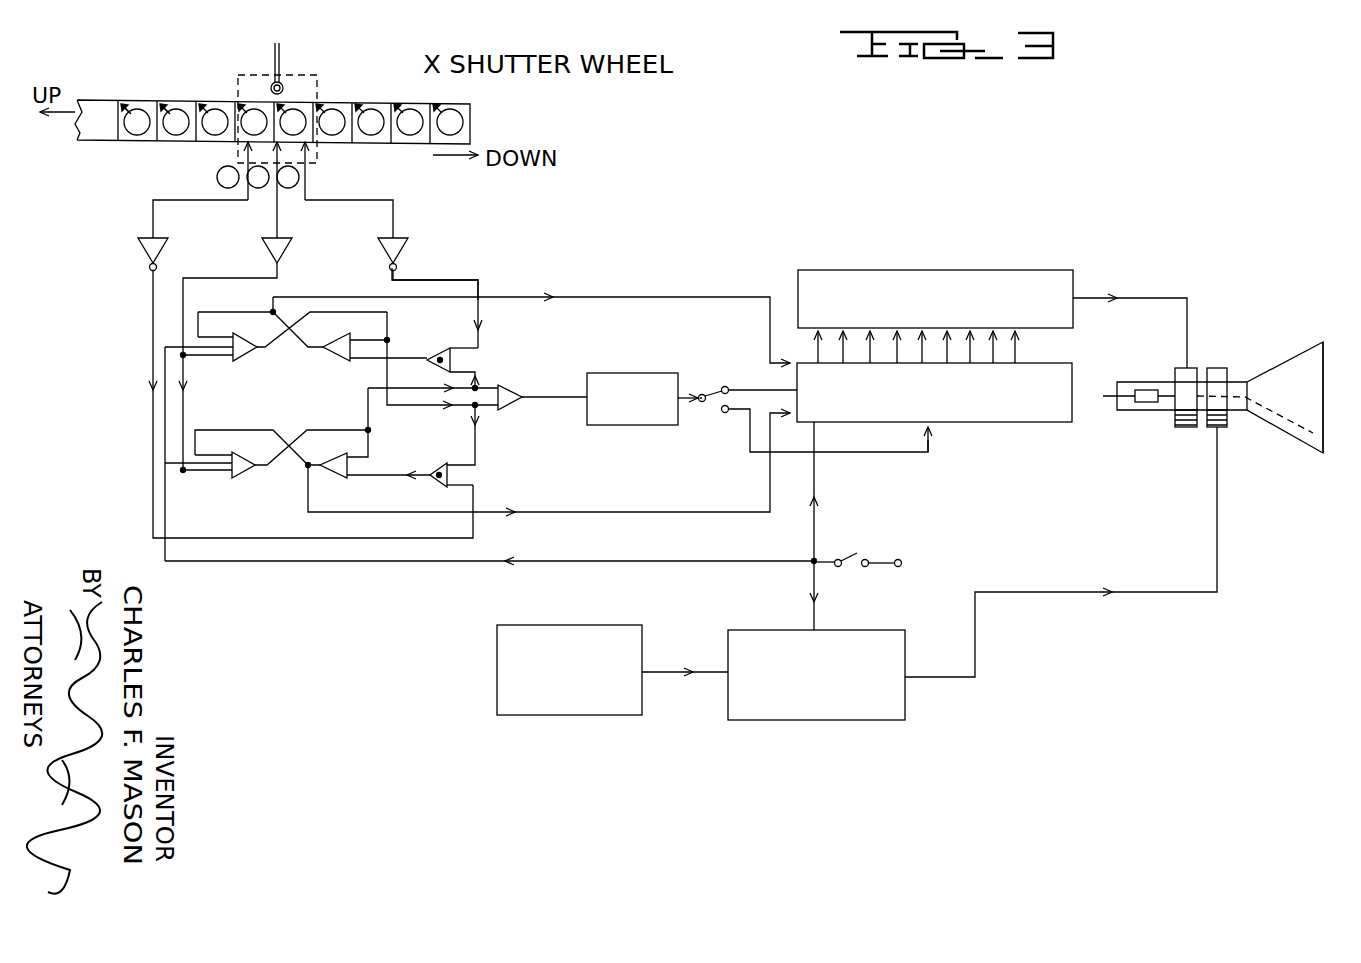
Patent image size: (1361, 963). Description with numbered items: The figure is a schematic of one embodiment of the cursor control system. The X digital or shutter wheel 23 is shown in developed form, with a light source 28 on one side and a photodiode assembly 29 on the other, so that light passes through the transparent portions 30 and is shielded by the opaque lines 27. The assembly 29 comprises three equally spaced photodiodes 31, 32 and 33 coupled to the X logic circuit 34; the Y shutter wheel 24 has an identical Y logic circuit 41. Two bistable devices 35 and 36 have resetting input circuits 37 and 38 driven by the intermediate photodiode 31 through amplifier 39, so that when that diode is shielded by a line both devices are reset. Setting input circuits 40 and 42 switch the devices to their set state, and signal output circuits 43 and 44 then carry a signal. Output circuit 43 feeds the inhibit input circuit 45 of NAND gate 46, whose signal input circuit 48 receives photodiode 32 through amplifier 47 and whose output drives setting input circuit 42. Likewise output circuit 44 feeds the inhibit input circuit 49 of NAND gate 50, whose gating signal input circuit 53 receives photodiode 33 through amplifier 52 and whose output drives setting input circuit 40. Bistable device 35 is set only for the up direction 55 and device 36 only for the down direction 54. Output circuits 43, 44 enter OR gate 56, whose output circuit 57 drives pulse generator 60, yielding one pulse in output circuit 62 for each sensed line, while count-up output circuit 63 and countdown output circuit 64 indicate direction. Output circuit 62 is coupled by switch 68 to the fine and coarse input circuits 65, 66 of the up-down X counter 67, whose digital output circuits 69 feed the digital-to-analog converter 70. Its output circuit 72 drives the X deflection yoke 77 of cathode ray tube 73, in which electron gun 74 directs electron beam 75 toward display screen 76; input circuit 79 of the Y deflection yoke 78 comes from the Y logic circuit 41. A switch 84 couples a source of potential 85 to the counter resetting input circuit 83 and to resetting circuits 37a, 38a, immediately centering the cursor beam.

The X digital or shutter wheel 23 is at (485, 126).
The Y shutter wheel 24 is at (574, 712).
The opaque lines 27 is at (120, 115).
The light source 28 is at (293, 68).
The photodiode assembly 29 is at (236, 144).
The transparent portions 30 is at (148, 112).
The photodiode No. 1 31 is at (273, 202).
The photodiode No. 2 32 is at (238, 152).
The photodiode No. 3 33 is at (306, 152).
The X logic circuit 34 is at (640, 341).
The bistable device 35 is at (305, 349).
The bistable device 36 is at (306, 475).
The resetting input circuit 37 is at (228, 367).
The resetting circuit 37a is at (178, 343).
The resetting input circuit 38 is at (223, 486).
The resetting circuit 38a is at (178, 462).
The amplifier 39 is at (292, 254).
The setting input circuit 40 is at (368, 365).
The Y logic circuit 41 is at (826, 714).
The setting input circuit 42 is at (358, 474).
The signal output circuit 43 is at (424, 405).
The signal output circuit 44 is at (430, 362).
The inhibit input circuit 45 is at (480, 462).
The NAND gate 46 is at (438, 462).
The amplifier 47 is at (140, 245).
The signal input circuit 48 is at (474, 490).
The inhibit input circuit 49 is at (477, 370).
The NAND gate 50 is at (432, 352).
The amplifier 52 is at (410, 250).
The gating signal input circuit 53 is at (472, 316).
The down direction 54 is at (460, 165).
The up direction 55 is at (62, 115).
The OR gate 56 is at (512, 390).
The output circuit 57 is at (545, 395).
The pulse generator 60 is at (630, 373).
The output circuit 62 is at (688, 385).
The count-up output circuit 63 is at (535, 290).
The countdown output circuit 64 is at (556, 516).
The fine input circuit 65 is at (730, 382).
The coarse input circuit 66 is at (932, 447).
The X counter 67 is at (1033, 404).
The switch 68 is at (817, 446).
The digital output circuits 69 is at (1045, 335).
The digital-to-analog converter 70 is at (972, 270).
The output circuit 72 is at (1087, 290).
The cathode ray tube 73 is at (1228, 393).
The electron gun 74 is at (1140, 407).
The electron beam 75 is at (1296, 427).
The display screen 76 is at (1328, 372).
The X deflection yoke 77 is at (1190, 368).
The Y deflection yoke 78 is at (1222, 368).
The input circuit 79 is at (1217, 550).
The resetting input circuit 83 is at (811, 507).
The switch 84 is at (856, 550).
The source of potential 85 is at (902, 560).